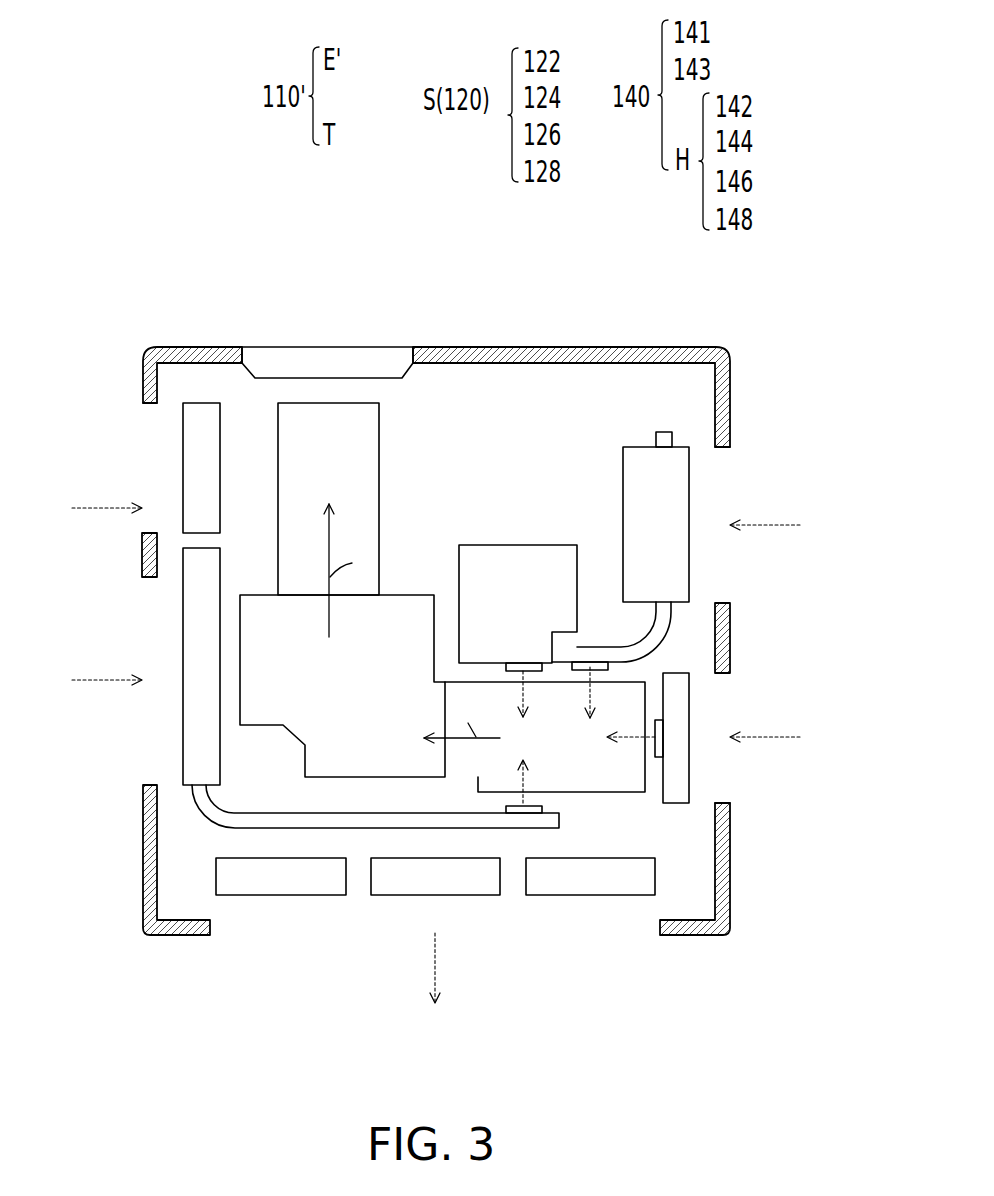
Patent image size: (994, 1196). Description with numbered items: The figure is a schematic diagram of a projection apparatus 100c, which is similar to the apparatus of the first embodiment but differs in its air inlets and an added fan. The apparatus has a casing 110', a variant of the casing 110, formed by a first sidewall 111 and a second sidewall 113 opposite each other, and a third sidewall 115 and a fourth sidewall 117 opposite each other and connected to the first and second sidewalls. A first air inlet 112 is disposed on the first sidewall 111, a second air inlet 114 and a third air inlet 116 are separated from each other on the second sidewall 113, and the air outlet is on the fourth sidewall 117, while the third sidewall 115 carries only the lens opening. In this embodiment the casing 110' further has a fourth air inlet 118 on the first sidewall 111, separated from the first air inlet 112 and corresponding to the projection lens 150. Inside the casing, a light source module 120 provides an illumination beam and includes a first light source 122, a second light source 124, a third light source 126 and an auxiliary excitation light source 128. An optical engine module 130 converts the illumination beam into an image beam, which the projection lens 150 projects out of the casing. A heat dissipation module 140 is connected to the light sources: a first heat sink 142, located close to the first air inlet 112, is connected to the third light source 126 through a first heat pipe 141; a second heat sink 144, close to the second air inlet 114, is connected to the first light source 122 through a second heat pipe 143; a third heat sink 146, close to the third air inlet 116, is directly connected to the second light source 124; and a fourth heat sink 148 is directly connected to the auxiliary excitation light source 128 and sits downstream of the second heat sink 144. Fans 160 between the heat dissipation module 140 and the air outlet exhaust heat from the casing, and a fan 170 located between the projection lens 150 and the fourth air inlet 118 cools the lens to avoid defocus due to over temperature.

The projection apparatus 100c is at (650, 1018).
The casing 110 is at (439, 628).
The casing 110' is at (439, 628).
The first sidewall 111 is at (143, 387).
The first air inlet 112 is at (150, 580).
The second sidewall 113 is at (732, 858).
The second air inlet 114 is at (722, 449).
The third sidewall 115 is at (563, 347).
The third air inlet 116 is at (723, 802).
The fourth sidewall 117 is at (180, 938).
The fourth air inlet 118 is at (150, 405).
The light source module 120 is at (618, 748).
The first light source 122 is at (598, 660).
The second light source 124 is at (668, 750).
The third light source 126 is at (516, 815).
The auxiliary excitation light source 128 is at (521, 662).
The optical engine module 130 is at (410, 607).
The heat dissipation module 140 is at (438, 642).
The first heat pipe 141 is at (198, 800).
The first heat sink 142 is at (197, 718).
The second heat pipe 143 is at (662, 633).
The second heat sink 144 is at (672, 556).
The third heat sink 146 is at (675, 793).
The fourth heat sink 148 is at (520, 565).
The projection lens 150 is at (357, 450).
The fans 160 is at (287, 883).
The fan 170 is at (208, 490).